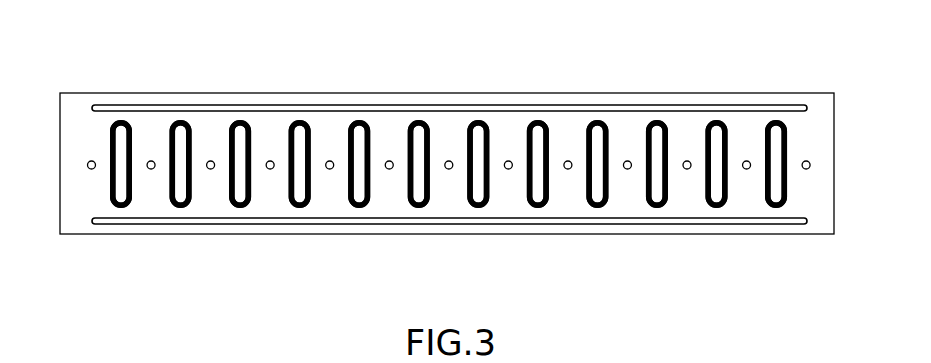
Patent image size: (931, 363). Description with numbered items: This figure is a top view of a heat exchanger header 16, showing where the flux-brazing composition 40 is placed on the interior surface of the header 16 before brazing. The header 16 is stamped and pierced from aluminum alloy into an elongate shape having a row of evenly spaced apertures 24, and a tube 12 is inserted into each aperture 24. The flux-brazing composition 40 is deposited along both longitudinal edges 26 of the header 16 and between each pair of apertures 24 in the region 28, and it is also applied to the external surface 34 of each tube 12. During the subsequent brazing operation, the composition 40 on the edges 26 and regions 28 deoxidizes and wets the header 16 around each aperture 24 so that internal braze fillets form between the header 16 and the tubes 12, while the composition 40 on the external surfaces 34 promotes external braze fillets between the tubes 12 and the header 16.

The tube 12 is at (416, 120).
The header 16 is at (82, 200).
The aperture 24 is at (190, 127).
The longitudinal edge 26 is at (235, 103).
The region between apertures 28 is at (143, 143).
The external surface 34 is at (285, 148).
The flux-brazing composition 40 is at (88, 165).